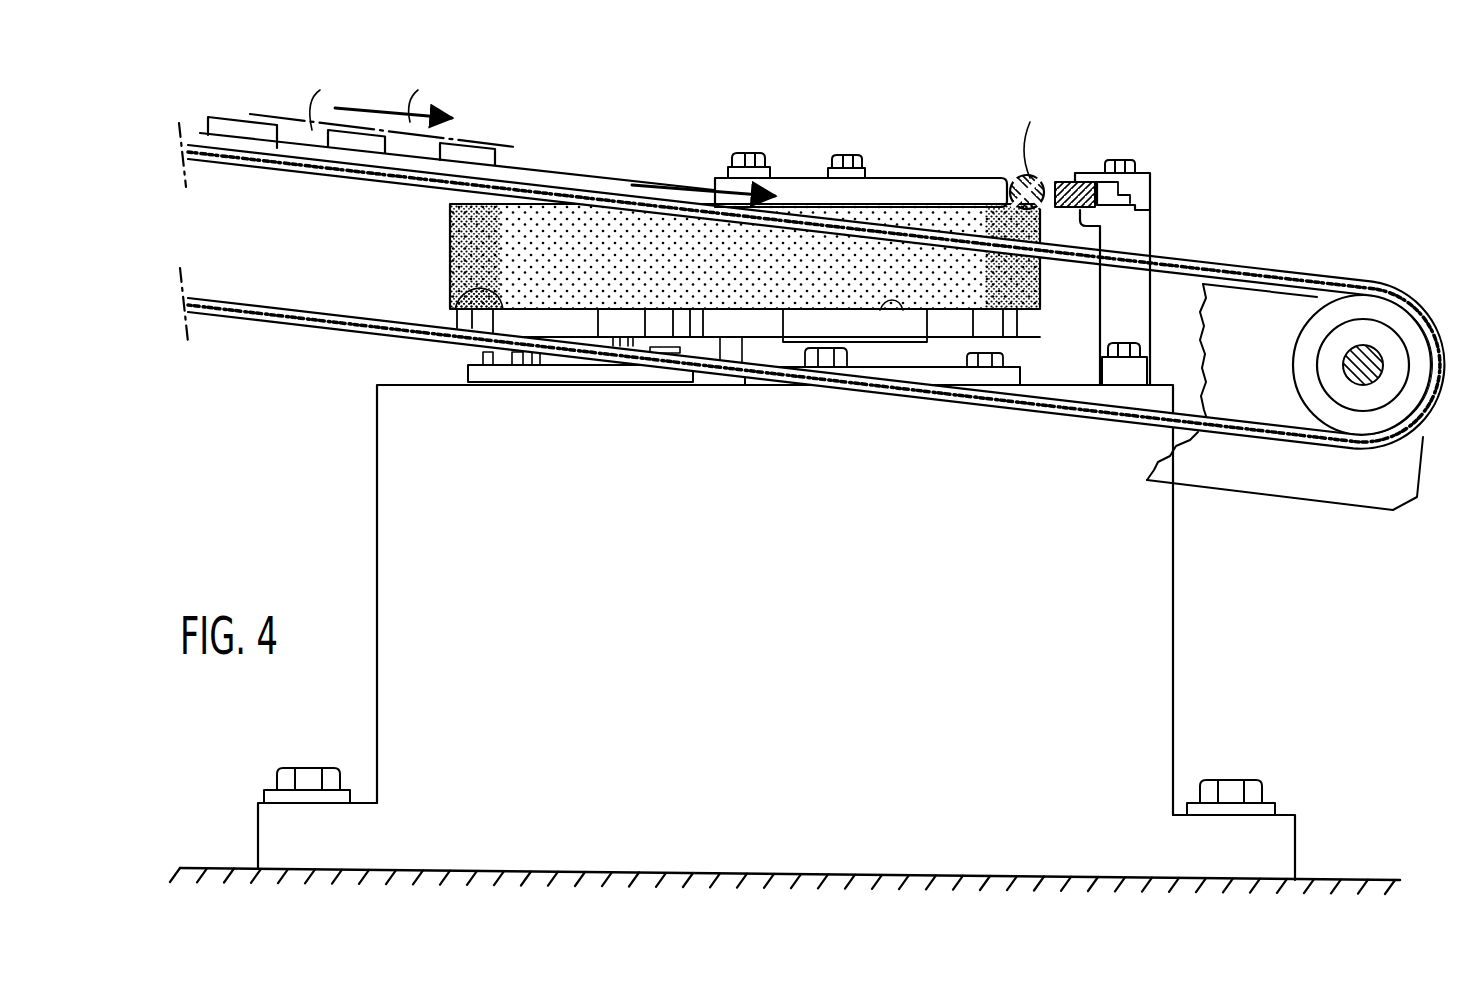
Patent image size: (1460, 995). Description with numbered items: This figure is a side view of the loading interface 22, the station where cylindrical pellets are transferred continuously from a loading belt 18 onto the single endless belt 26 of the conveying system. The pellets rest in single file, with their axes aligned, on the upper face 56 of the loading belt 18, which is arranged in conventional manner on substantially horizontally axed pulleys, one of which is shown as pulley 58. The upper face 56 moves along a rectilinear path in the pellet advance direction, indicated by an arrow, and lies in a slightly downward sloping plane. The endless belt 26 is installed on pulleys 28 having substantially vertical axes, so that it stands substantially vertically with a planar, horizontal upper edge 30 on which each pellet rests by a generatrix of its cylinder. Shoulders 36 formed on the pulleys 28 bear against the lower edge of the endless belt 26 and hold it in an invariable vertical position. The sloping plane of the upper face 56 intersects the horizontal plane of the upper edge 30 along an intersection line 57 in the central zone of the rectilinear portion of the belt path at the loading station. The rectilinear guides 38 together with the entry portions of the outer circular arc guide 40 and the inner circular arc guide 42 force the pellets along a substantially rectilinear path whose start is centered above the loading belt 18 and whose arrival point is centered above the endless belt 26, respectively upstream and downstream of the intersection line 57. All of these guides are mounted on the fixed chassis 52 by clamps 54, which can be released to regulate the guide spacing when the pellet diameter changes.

The loading belt 18 is at (248, 318).
The loading interface 22 is at (943, 213).
The endless belt 26 is at (446, 231).
The pulleys 28 is at (818, 327).
The upper edge 30 is at (937, 208).
The shoulders 36 is at (456, 293).
The first pair of rectilinear guides 38 is at (556, 185).
The outer circular arc guide 40 is at (1078, 184).
The inner circular arc guide 42 is at (880, 192).
The fixed chassis 52 is at (1182, 607).
The clamps 54 is at (848, 180).
The upper face 56 is at (184, 148).
The intersection line 57 is at (742, 206).
The pulley 58 is at (1380, 310).